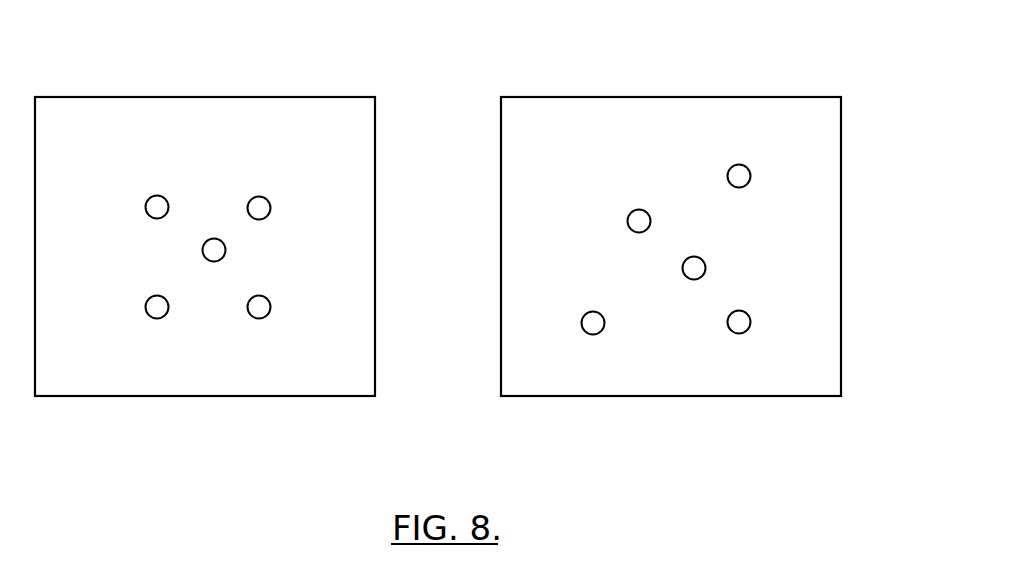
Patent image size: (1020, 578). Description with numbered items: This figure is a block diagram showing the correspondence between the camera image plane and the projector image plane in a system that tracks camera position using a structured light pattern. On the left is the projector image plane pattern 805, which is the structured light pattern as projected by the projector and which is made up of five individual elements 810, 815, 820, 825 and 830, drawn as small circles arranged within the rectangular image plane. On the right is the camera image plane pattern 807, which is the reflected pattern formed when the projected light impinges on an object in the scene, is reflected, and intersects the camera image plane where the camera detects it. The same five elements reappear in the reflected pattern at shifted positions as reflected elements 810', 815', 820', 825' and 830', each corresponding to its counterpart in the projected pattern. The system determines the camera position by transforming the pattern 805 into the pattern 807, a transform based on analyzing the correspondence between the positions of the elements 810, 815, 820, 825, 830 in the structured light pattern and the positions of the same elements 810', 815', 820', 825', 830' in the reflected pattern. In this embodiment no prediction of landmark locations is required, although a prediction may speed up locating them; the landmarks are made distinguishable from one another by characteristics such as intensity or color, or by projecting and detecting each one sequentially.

The projector image plane pattern 805 is at (375, 358).
The camera image plane pattern 807 is at (841, 343).
The individual element 810 is at (188, 193).
The individual element 815 is at (188, 293).
The individual element 820 is at (290, 193).
The individual element 825 is at (246, 241).
The individual element 830 is at (290, 293).
The reflected element 810' is at (676, 211).
The reflected element 815' is at (629, 312).
The reflected element 820' is at (773, 163).
The reflected element 825' is at (728, 256).
The reflected element 830' is at (775, 310).